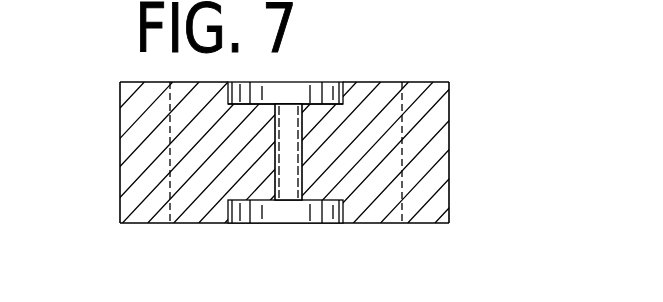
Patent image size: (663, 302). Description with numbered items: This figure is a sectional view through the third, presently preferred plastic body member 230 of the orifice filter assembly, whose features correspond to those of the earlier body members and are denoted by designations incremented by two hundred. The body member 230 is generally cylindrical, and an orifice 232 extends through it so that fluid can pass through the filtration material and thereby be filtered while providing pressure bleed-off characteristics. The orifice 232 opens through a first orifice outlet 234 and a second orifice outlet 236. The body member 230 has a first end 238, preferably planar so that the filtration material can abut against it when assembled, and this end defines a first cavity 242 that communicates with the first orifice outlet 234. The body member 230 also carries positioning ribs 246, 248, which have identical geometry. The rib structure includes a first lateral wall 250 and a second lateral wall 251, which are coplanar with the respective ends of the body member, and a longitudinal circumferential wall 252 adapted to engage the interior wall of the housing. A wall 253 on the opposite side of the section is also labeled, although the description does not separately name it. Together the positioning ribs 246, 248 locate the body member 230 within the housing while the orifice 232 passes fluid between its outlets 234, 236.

The body member 230 is at (480, 98).
The orifice 232 is at (288, 153).
The first orifice outlet 234 is at (295, 104).
The second orifice outlet 236 is at (293, 203).
The first end 238 is at (228, 82).
The first cavity 242 is at (322, 92).
The positioning rib 246 is at (137, 195).
The positioning rib 248 is at (440, 213).
The first lateral wall 250 is at (142, 82).
The second lateral wall 251 is at (426, 82).
The longitudinal circumferential wall 252 is at (120, 142).
The side surface 253 is at (450, 140).